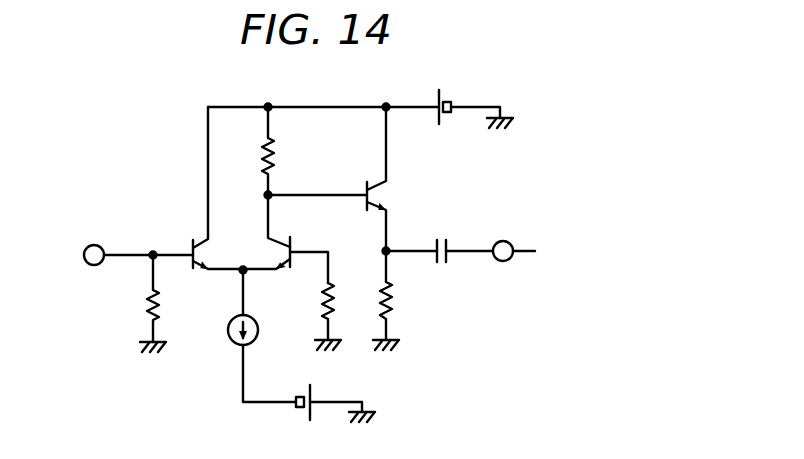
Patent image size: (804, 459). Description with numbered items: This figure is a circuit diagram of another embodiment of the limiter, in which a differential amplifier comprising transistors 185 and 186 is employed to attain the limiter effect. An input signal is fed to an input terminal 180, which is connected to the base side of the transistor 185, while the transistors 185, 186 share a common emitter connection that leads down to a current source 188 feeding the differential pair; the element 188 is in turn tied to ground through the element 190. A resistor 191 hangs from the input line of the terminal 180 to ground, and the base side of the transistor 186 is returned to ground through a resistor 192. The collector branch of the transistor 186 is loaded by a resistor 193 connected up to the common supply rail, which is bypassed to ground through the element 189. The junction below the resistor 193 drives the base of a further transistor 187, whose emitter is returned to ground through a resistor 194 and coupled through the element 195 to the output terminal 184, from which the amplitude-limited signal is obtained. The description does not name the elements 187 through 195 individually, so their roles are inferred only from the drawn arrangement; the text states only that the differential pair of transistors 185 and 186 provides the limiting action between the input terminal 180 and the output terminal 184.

The input terminal 180 is at (86, 248).
The output terminal 184 is at (538, 252).
The transistor 185 is at (203, 238).
The transistor 186 is at (280, 238).
The transistor 187 is at (378, 197).
The current source 188 is at (228, 323).
The bypass capacitor 189 is at (445, 102).
The bypass capacitor 190 is at (298, 408).
The resistor 191 is at (147, 301).
The resistor 192 is at (322, 300).
The resistor 193 is at (272, 143).
The resistor 194 is at (392, 290).
The coupling capacitor 195 is at (441, 265).